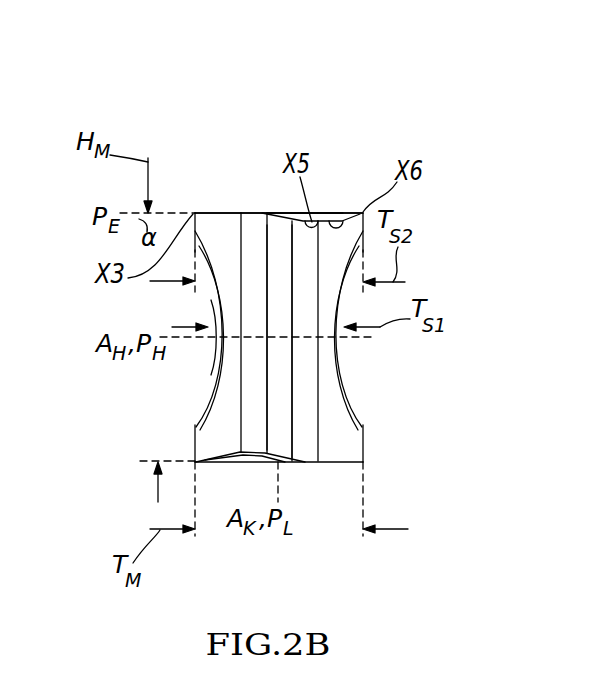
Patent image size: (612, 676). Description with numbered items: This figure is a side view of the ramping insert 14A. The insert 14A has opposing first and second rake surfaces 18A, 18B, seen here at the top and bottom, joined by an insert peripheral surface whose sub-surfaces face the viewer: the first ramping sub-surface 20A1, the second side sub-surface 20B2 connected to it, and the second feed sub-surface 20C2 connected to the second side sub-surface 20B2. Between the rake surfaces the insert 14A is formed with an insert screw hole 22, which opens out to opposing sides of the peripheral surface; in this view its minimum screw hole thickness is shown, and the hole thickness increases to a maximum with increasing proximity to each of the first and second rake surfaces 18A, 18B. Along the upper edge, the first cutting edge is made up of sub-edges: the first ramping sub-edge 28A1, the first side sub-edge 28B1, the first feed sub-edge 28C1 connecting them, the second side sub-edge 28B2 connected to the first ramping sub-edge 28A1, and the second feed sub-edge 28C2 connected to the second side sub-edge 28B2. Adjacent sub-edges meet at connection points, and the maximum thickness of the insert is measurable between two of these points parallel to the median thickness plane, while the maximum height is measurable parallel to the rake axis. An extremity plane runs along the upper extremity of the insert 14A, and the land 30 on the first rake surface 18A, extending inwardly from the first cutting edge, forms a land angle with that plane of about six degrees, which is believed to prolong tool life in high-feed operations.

The insert 14A is at (168, 76).
The first rake surface 18A is at (238, 182).
The second rake surface 18B is at (316, 478).
The first ramping sub-surface 20A1 is at (328, 433).
The second side sub-surface 20B2 is at (282, 414).
The second feed sub-surface 20C2 is at (222, 432).
The insert screw hole 22 is at (199, 310).
The first ramping sub-edge 28A1 is at (346, 214).
The first side sub-edge 28B1 is at (293, 216).
The second side sub-edge 28B2 is at (282, 214).
The first feed sub-edge 28C1 is at (326, 214).
The second feed sub-edge 28C2 is at (217, 213).
The land 30 is at (354, 213).